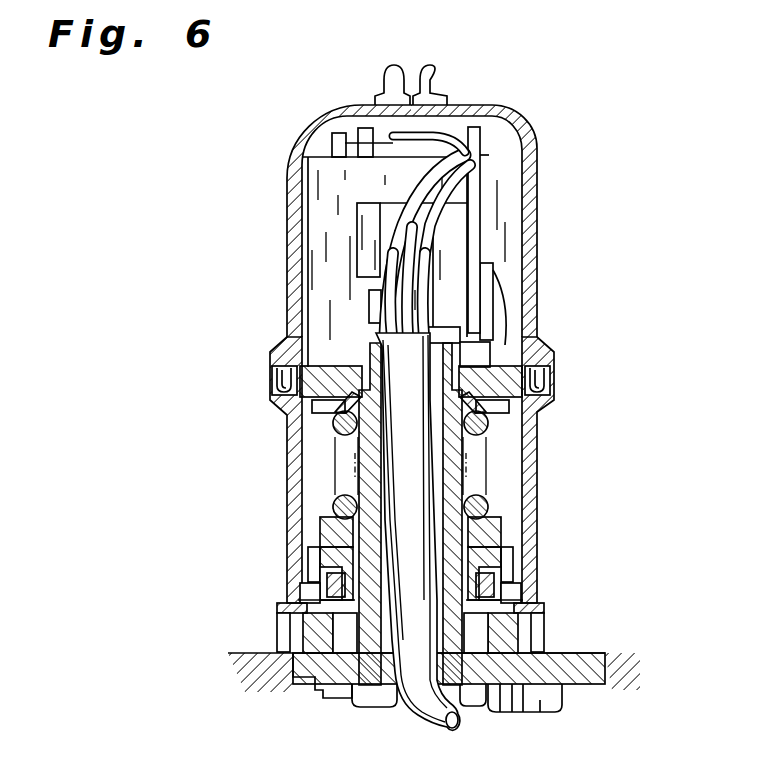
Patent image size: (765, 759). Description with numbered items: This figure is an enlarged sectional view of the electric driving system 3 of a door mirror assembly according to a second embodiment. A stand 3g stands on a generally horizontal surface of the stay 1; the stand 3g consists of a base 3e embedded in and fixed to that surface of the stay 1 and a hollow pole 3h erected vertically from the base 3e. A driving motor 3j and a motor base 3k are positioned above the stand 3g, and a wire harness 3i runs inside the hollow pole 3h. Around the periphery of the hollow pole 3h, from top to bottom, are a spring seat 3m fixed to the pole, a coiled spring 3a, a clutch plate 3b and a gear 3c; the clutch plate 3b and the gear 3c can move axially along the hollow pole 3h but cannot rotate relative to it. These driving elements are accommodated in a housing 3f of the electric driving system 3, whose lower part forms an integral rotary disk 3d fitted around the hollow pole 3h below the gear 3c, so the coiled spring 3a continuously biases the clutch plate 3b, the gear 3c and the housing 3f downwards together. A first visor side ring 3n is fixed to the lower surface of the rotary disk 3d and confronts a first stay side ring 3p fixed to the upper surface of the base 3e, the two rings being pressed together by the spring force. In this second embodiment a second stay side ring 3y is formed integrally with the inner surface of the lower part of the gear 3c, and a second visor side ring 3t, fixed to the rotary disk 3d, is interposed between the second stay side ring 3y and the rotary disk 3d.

The stay 1 is at (272, 725).
The electric driving system 3 is at (414, 407).
The coiled spring 3a is at (340, 433).
The clutch plate 3b is at (473, 535).
The gear 3c is at (485, 545).
The rotary disk 3d is at (315, 614).
The base 3e is at (582, 682).
The housing 3f is at (527, 192).
The stand 3g is at (587, 648).
The hollow pole 3h is at (365, 470).
The wire harness 3i is at (432, 702).
The driving motor 3j is at (313, 200).
The motor base 3k is at (348, 363).
The spring seat 3m is at (355, 427).
The first visor side ring 3n is at (305, 618).
The first stay side ring 3p is at (280, 637).
The second visor side ring 3t is at (330, 592).
The second stay side ring 3y is at (323, 563).